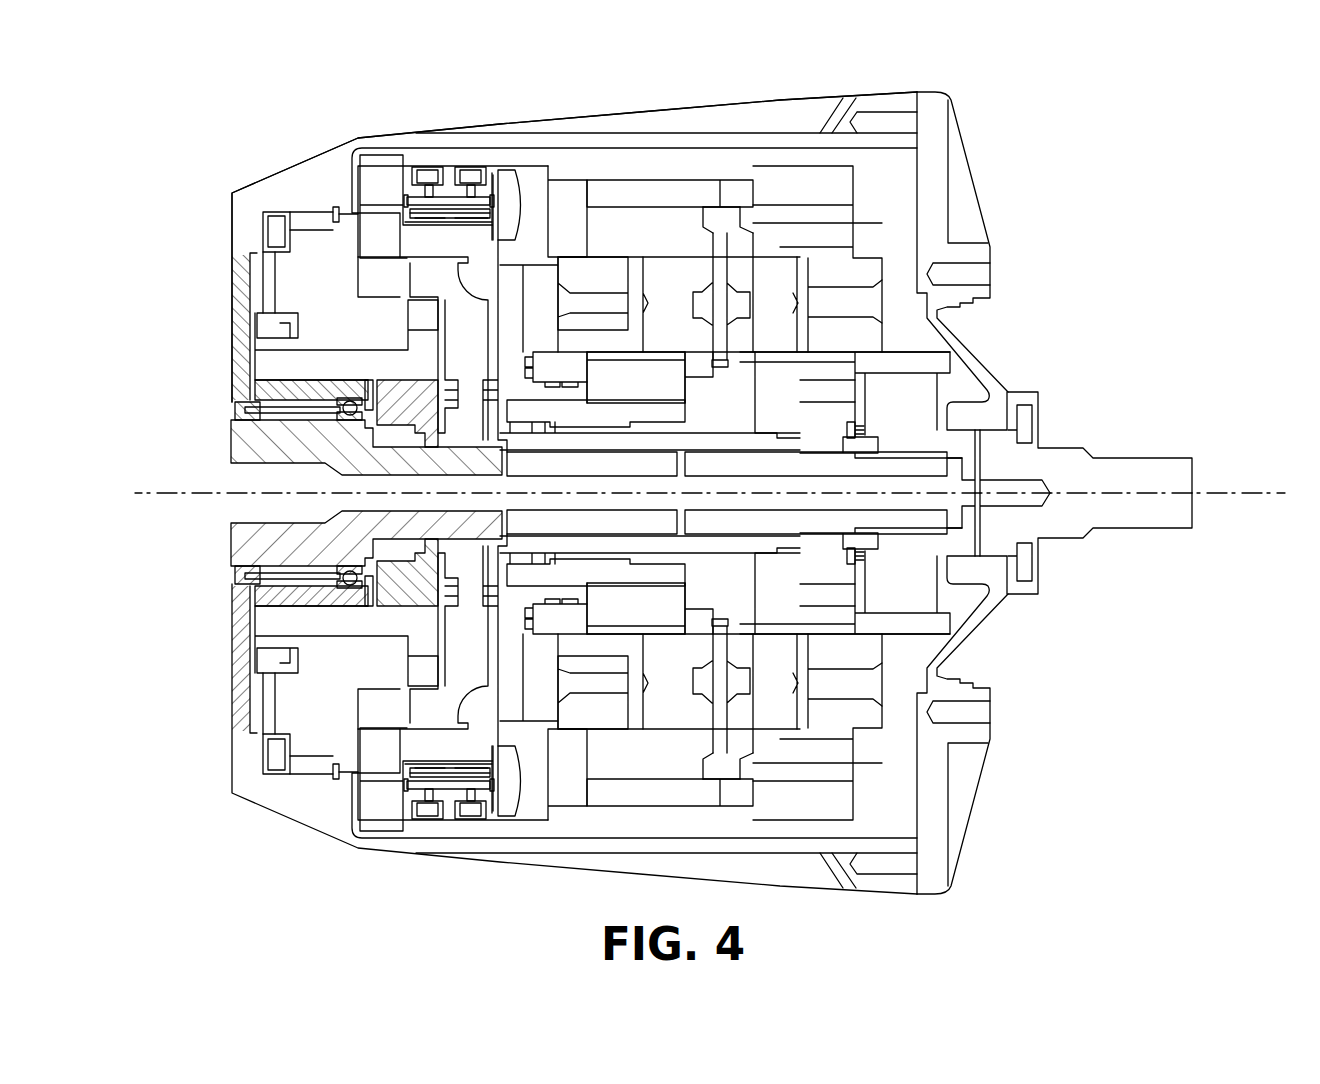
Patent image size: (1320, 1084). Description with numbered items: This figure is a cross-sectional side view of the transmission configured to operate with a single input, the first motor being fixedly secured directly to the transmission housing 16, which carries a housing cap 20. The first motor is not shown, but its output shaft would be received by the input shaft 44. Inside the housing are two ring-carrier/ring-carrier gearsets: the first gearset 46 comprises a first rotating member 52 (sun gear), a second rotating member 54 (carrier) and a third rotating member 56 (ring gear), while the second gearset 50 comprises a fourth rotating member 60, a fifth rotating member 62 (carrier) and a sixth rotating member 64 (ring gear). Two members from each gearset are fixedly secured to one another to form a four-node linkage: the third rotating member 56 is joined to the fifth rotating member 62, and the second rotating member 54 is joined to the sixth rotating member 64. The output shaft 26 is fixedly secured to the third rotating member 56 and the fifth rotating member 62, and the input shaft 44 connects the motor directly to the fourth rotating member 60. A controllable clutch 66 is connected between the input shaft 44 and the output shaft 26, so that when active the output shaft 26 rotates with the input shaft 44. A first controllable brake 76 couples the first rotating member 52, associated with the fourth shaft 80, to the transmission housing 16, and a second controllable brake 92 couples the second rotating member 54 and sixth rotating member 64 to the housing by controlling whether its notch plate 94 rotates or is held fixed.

The transmission housing 16 is at (698, 110).
The housing cap 20 is at (971, 179).
The output shaft 26 is at (1139, 452).
The input shaft 44 is at (230, 441).
The first gearset 46 is at (608, 174).
The second gearset 50 is at (793, 155).
The first rotating member 52 is at (610, 377).
The second rotating member 54 is at (578, 180).
The third rotating member 56 is at (580, 200).
The fourth rotating member 60 is at (820, 373).
The fifth rotating member 62 is at (720, 207).
The sixth rotating member 64 is at (830, 167).
The controllable clutch 66 is at (295, 326).
The first controllable brake 76 is at (428, 165).
The fourth shaft 80 is at (430, 233).
The second controllable brake 92 is at (430, 170).
The notch plate 94 is at (527, 250).